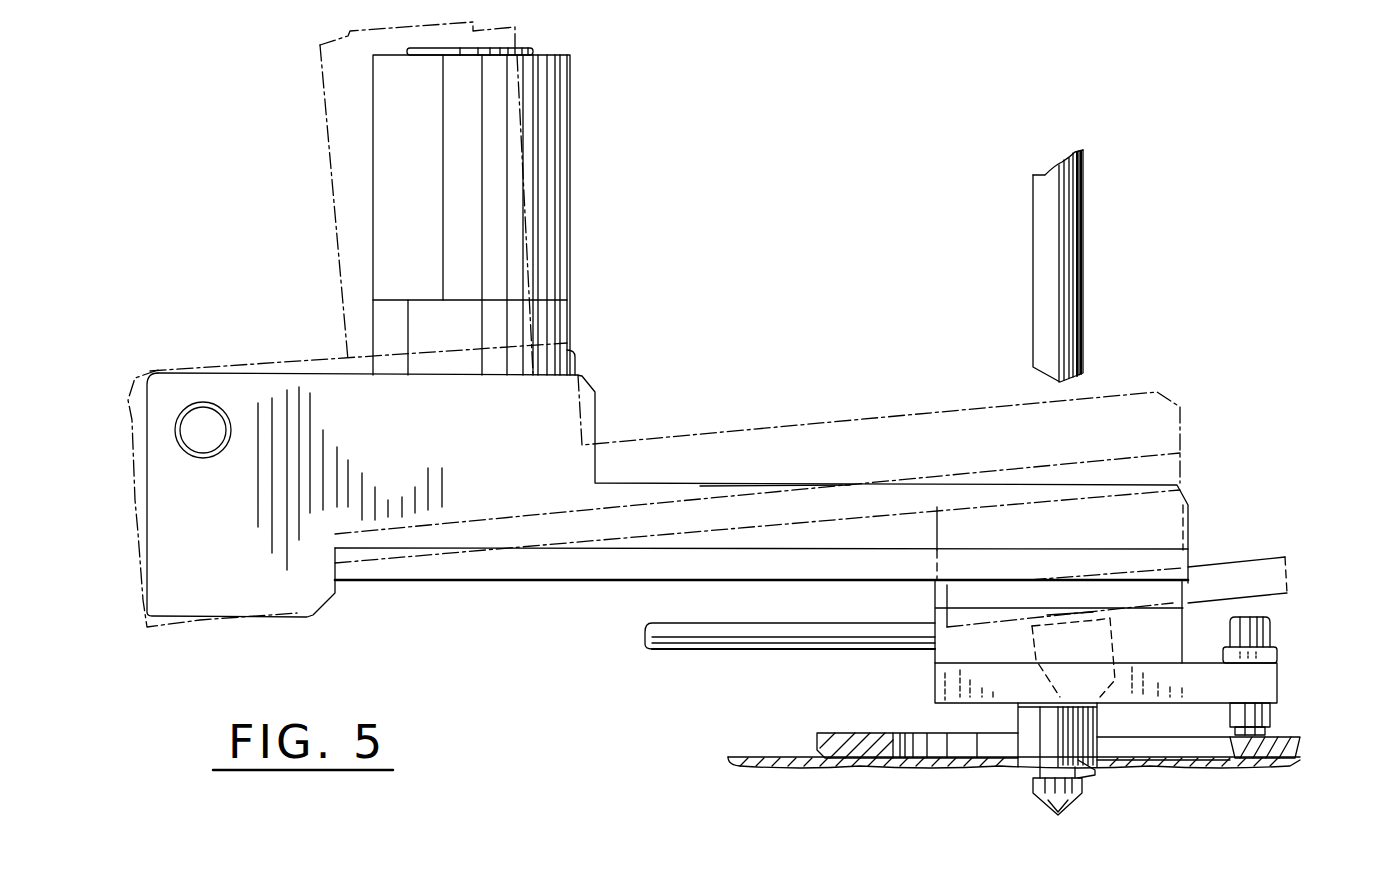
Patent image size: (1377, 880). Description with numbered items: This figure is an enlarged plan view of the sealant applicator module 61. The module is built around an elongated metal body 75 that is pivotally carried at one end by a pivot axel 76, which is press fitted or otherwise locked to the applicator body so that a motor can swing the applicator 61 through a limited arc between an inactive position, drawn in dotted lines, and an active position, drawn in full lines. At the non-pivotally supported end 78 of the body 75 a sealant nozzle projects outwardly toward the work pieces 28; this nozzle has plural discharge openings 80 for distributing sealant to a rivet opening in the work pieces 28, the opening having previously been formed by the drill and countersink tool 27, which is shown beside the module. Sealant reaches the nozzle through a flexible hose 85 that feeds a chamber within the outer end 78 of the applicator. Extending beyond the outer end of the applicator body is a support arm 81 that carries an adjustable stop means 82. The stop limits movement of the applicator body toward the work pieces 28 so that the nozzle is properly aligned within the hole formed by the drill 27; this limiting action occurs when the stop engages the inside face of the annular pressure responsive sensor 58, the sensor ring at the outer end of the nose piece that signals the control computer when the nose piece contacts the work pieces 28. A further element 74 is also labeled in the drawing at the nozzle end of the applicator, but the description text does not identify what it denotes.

The drill and countersink tool 27 is at (1086, 332).
The work components 28 is at (788, 757).
The annular pressure responsive sensor 58 is at (1298, 748).
The sealant applicator module 61 is at (610, 393).
The clamping bolt 74 is at (1020, 770).
The elongated metal body 75 is at (798, 440).
The pivot axel 76 is at (173, 443).
The non-pivotally supported end 78 is at (1190, 522).
The discharge openings 80 is at (1083, 773).
The support arm 81 is at (1282, 692).
The adjustable stop means 82 is at (1277, 647).
The flexible hose 85 is at (647, 643).